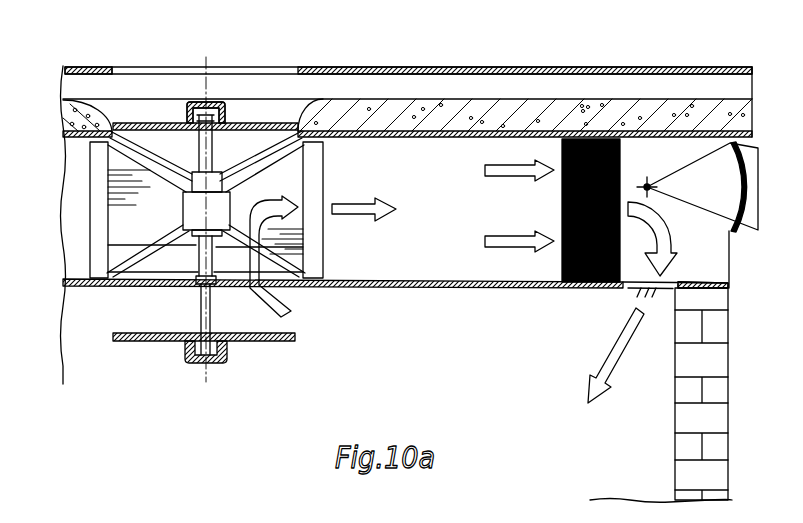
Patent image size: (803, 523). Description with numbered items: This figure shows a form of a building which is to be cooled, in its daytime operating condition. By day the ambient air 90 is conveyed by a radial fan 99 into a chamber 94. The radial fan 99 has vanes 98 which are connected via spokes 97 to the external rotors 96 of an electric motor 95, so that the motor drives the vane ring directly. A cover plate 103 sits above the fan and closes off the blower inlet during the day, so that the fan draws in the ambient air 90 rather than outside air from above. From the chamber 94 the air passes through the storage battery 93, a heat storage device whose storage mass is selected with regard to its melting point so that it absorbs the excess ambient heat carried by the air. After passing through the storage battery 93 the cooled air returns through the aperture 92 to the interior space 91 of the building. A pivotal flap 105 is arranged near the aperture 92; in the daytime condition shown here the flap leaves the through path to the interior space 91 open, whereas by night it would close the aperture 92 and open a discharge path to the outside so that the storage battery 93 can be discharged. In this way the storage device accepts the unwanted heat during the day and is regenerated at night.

The ambient air 90 is at (295, 318).
The interior space 91 is at (474, 318).
The aperture 92 is at (659, 289).
The storage battery 93 is at (562, 290).
The chamber 94 is at (442, 240).
The electric motor 95 is at (212, 178).
The external rotors 96 is at (192, 215).
The spokes 97 is at (270, 168).
The vanes 98 is at (311, 205).
The radial fan 99 is at (275, 226).
The cover plate 103 is at (142, 123).
The pivotal flap 105 is at (708, 207).